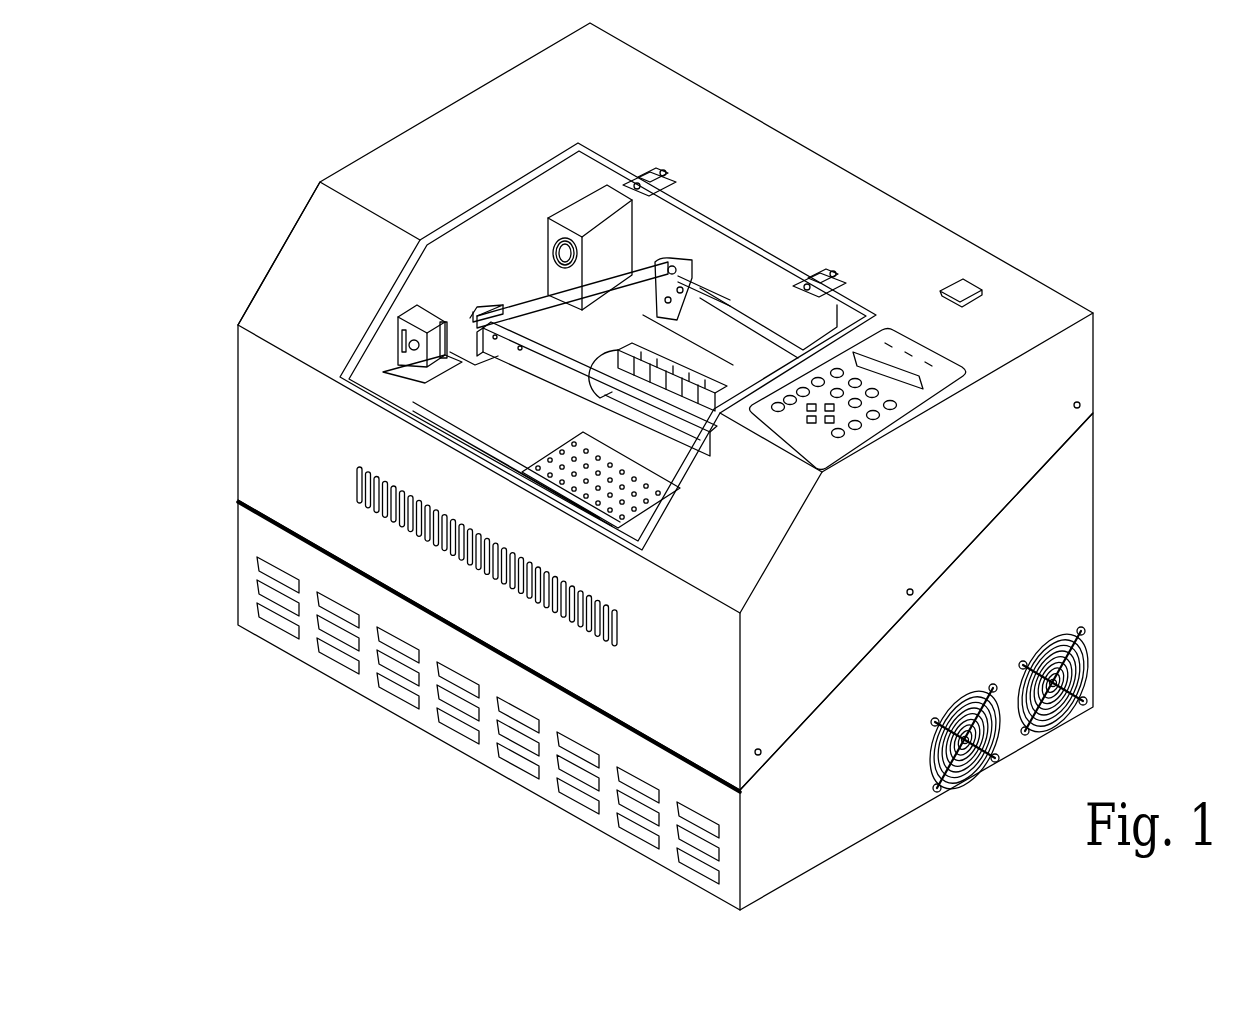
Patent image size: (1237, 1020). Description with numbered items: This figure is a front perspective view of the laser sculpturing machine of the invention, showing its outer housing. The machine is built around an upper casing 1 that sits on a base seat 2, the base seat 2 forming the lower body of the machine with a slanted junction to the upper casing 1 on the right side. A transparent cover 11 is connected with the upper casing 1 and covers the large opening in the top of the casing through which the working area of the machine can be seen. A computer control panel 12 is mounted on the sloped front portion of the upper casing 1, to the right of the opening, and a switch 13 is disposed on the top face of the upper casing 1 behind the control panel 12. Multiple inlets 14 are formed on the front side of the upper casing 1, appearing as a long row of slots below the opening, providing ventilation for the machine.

The upper casing 1 is at (665, 406).
The base seat 2 is at (1055, 553).
The transparent cover 11 is at (523, 243).
The computer control panel 12 is at (890, 410).
The switch 13 is at (965, 287).
The inlets 14 is at (457, 530).